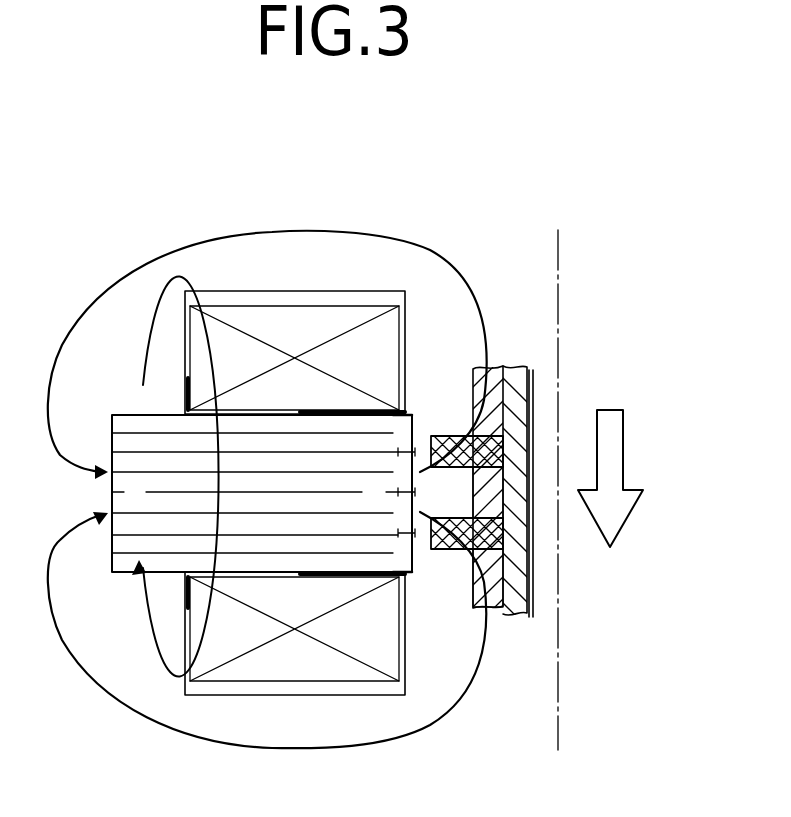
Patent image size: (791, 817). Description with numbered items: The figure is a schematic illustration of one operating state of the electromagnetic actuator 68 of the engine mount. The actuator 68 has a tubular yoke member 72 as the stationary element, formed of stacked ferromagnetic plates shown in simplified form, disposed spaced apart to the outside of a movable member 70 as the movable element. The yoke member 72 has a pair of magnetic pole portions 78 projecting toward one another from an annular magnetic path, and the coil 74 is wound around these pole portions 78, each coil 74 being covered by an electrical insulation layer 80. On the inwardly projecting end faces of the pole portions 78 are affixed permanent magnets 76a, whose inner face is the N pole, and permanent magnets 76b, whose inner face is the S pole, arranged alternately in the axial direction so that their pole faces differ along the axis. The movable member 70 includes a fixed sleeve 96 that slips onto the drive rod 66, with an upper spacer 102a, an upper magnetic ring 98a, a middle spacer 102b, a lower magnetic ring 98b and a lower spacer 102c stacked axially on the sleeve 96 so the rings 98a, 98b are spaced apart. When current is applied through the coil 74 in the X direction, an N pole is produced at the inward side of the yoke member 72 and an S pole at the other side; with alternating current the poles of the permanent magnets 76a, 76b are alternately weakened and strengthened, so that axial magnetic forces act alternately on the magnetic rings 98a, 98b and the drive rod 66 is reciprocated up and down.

The drive rod 66 is at (543, 383).
The electromagnetic actuator 68 is at (170, 220).
The movable member 70 is at (487, 334).
The yoke member 72 is at (153, 538).
The coil 74 is at (278, 657).
The permanent magnet 76a is at (405, 570).
The permanent magnet 76b is at (405, 418).
The magnetic pole portion 78 is at (266, 493).
The electrical insulation layer 80 is at (400, 357).
The fixed sleeve 96 is at (515, 590).
The upper magnetic ring 98a is at (485, 452).
The lower magnetic ring 98b is at (488, 535).
The upper spacer 102a is at (500, 390).
The middle spacer 102b is at (490, 495).
The lower spacer 102c is at (495, 590).
The X direction X is at (143, 362).